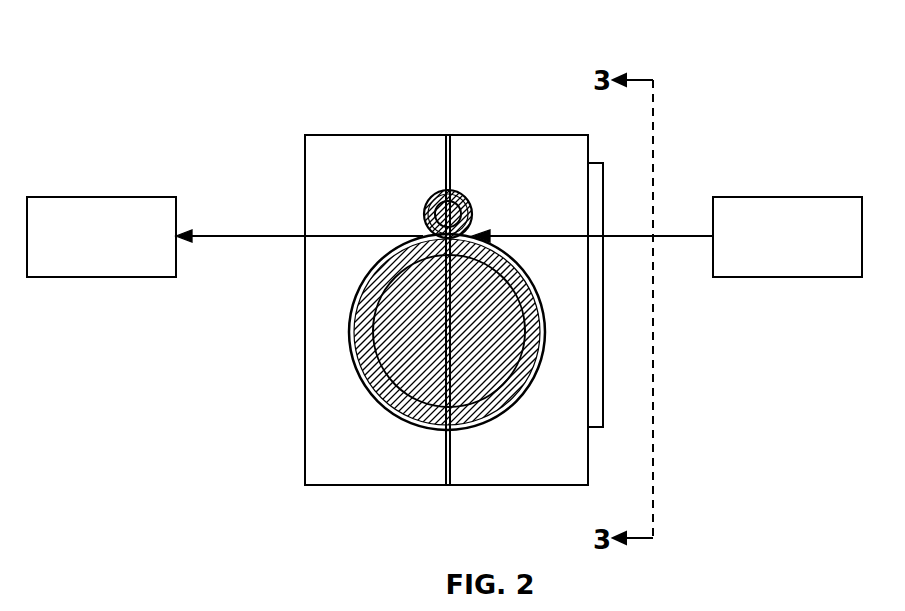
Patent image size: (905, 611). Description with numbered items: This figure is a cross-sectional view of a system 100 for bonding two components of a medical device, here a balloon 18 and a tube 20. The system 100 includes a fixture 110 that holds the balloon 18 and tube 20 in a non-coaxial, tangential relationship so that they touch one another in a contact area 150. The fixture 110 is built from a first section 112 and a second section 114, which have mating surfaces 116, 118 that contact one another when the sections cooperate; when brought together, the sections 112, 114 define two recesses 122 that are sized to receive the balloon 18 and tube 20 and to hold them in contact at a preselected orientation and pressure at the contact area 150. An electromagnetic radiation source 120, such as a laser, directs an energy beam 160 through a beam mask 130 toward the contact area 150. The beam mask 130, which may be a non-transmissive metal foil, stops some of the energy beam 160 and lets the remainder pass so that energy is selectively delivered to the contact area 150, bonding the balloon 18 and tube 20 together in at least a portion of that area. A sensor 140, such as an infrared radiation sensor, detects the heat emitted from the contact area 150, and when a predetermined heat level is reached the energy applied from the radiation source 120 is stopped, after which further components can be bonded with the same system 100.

The system 100 is at (146, 56).
The fixture 110 is at (256, 396).
The first section 112 is at (378, 487).
The second section 114 is at (556, 487).
The mating surface 116 is at (446, 462).
The mating surface 118 is at (452, 472).
The electromagnetic radiation source 120 is at (783, 196).
The recesses 122 is at (353, 362).
The beam mask 130 is at (603, 395).
The sensor 140 is at (92, 196).
The contact area 150 is at (426, 222).
The energy beam 160 is at (665, 237).
The balloon 18 is at (388, 387).
The tube 20 is at (474, 215).